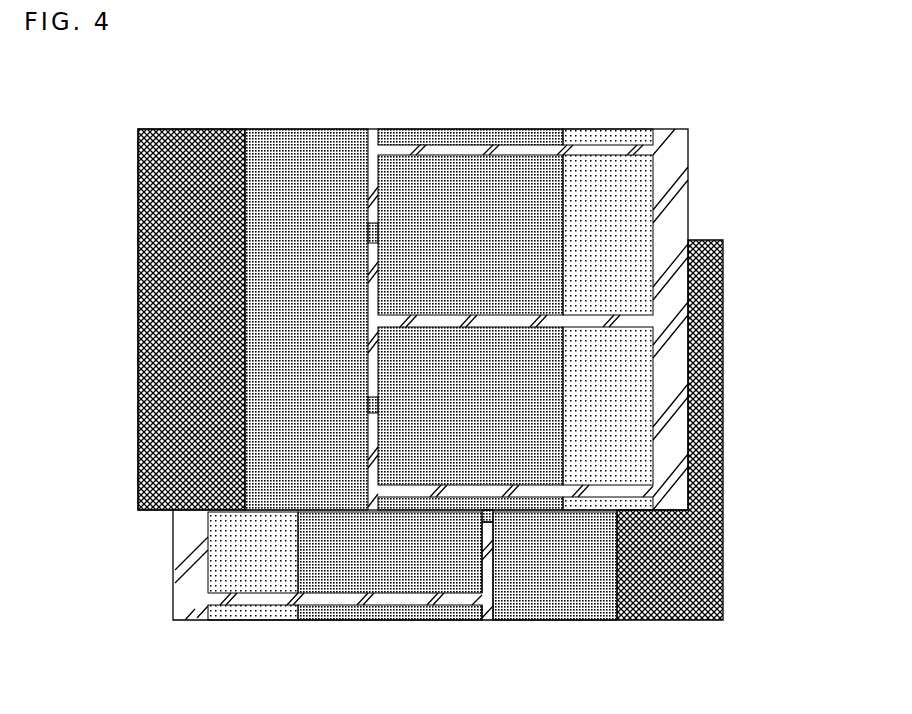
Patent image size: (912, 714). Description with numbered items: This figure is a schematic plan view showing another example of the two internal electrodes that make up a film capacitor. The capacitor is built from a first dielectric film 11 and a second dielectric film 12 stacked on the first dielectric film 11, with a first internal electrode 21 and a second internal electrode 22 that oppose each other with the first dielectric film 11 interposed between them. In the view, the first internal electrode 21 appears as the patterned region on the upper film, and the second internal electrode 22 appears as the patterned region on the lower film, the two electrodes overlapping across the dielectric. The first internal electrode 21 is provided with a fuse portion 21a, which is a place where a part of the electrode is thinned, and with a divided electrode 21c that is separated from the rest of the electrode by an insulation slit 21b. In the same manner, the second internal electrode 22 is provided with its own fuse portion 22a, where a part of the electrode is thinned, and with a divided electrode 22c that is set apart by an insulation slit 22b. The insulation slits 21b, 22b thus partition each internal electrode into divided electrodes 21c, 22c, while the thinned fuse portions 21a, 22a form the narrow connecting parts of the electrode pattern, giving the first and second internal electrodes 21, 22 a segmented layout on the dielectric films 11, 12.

The first dielectric film 11 is at (682, 200).
The second dielectric film 12 is at (180, 553).
The first internal electrode 21 is at (217, 126).
The fuse portion 21a is at (371, 222).
The insulation slit 21b is at (455, 150).
The divided electrode 21c is at (503, 197).
The second internal electrode 22 is at (656, 624).
The fuse portion 22a is at (491, 555).
The insulation slit 22b is at (433, 600).
The divided electrode 22c is at (373, 580).